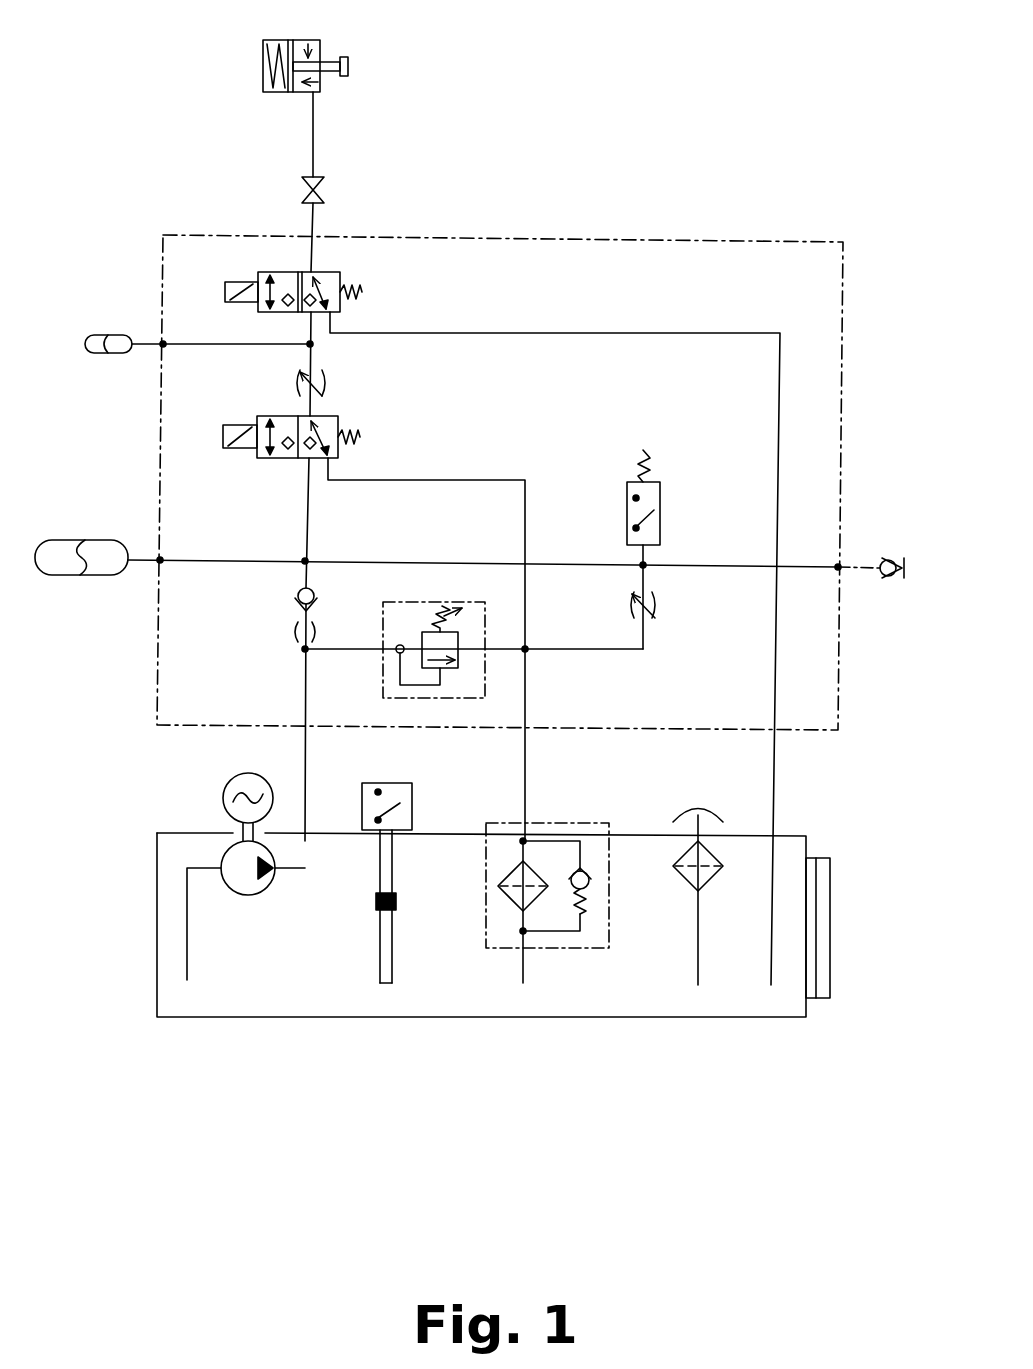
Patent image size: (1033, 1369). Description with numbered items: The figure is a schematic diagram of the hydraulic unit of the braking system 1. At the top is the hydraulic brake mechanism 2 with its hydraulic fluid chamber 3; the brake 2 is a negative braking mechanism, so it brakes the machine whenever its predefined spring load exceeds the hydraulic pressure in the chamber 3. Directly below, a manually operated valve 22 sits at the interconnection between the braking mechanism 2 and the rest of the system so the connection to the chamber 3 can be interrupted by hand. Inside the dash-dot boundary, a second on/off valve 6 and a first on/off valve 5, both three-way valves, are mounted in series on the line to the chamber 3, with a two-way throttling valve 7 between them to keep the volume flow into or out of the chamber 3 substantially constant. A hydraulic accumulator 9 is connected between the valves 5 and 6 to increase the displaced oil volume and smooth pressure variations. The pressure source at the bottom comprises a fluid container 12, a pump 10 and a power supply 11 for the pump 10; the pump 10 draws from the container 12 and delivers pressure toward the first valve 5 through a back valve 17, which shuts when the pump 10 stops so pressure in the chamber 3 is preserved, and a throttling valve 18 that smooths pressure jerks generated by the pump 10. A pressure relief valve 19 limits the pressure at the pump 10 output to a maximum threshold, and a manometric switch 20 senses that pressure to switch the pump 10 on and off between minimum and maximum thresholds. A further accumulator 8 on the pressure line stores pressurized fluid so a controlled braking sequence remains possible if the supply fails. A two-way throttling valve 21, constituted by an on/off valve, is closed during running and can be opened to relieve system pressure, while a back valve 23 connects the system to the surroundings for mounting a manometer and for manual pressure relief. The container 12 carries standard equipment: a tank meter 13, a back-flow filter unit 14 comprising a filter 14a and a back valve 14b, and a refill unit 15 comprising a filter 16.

The hydraulic unit of the braking system 1 is at (490, 190).
The hydraulic brake mechanism 2 is at (308, 50).
The hydraulic fluid chamber 3 is at (310, 83).
The first on/off valve 5 is at (325, 420).
The second on/off valve 6 is at (335, 278).
The two-way throttling valve 7 is at (320, 385).
The accumulator 8 is at (84, 576).
The hydraulic accumulator 9 is at (104, 352).
The pump 10 is at (241, 895).
The power supply 11 is at (220, 793).
The fluid container 12 is at (290, 1022).
The tank meter 13 is at (440, 805).
The back-flow filter unit 14 is at (536, 825).
The filter 14a is at (520, 895).
The back valve 14b is at (592, 888).
The refill unit 15 is at (705, 812).
The filter 16 is at (693, 886).
The back valve 17 is at (298, 594).
The throttling valve 18 is at (296, 632).
The pressure relief valve 19 is at (385, 663).
The manometric switch 20 is at (690, 490).
The two-way throttling valve 21 is at (672, 628).
The valve 22 is at (306, 190).
The back valve 23 is at (880, 563).